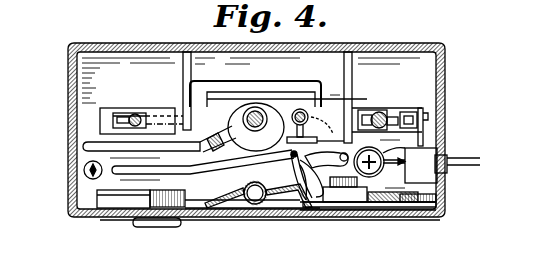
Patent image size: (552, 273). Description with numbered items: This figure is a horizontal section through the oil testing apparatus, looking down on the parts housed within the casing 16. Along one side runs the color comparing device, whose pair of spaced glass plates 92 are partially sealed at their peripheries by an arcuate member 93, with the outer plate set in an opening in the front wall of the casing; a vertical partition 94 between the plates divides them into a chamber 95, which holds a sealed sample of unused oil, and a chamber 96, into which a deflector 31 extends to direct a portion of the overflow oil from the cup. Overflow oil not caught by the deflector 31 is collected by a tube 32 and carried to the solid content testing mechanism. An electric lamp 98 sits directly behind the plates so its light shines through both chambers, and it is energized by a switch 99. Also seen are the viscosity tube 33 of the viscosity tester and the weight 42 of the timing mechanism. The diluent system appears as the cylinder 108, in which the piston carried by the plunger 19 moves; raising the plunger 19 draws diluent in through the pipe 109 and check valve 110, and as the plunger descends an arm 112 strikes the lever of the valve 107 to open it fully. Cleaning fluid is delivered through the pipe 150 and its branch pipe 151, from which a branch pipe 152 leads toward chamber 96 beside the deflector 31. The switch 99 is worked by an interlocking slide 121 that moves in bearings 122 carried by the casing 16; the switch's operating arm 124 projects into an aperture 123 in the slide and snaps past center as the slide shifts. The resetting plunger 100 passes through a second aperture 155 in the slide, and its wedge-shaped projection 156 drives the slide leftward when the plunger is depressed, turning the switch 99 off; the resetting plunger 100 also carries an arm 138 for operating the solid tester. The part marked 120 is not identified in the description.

The casing 16 is at (444, 74).
The plunger 19 is at (268, 114).
The deflector 31 is at (340, 202).
The tube 32 is at (360, 178).
The viscosity tube 33 is at (254, 208).
The weight 42 is at (84, 170).
The glass plates 92 is at (419, 197).
The arcuate member 93 is at (445, 204).
The vertical partition 94 is at (369, 205).
The chamber 95 is at (402, 213).
The chamber 96 is at (317, 210).
The electric lamp 98 is at (440, 137).
The switch 99 is at (428, 152).
The resetting plunger 100 is at (115, 113).
The valve 107 is at (352, 94).
The cylinder 108 is at (238, 110).
The pipe 109 is at (88, 146).
The check valve 110 is at (214, 160).
The arm 112 is at (295, 158).
The bracket 120 is at (121, 220).
The interlocking slide 121 is at (204, 92).
The bearings 122 is at (185, 50).
The aperture 123 is at (414, 122).
The operating arm 124 is at (422, 118).
The arm 138 is at (160, 110).
The pipe 150 is at (111, 175).
The branch pipe 151 is at (216, 176).
The branch pipe 152 is at (321, 218).
The aperture 155 is at (145, 110).
The wedge-shaped projection 156 is at (115, 117).